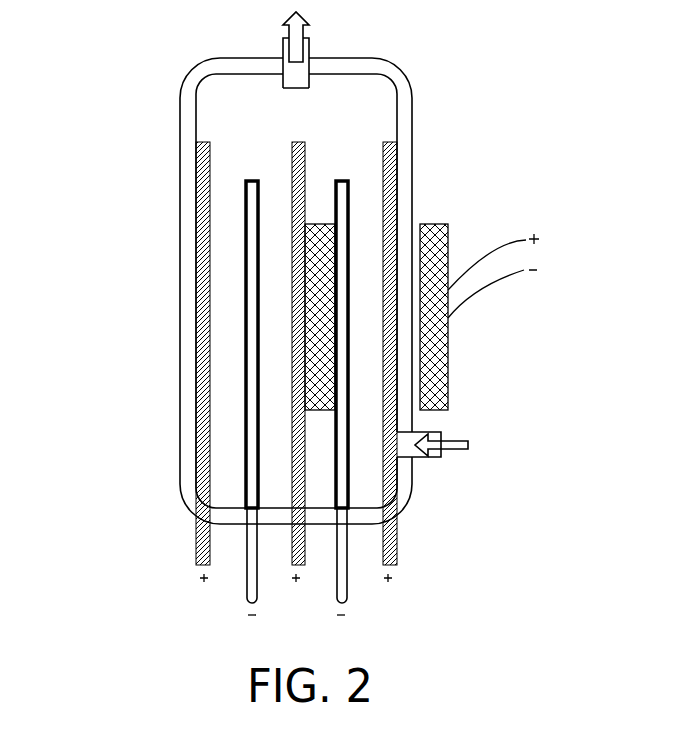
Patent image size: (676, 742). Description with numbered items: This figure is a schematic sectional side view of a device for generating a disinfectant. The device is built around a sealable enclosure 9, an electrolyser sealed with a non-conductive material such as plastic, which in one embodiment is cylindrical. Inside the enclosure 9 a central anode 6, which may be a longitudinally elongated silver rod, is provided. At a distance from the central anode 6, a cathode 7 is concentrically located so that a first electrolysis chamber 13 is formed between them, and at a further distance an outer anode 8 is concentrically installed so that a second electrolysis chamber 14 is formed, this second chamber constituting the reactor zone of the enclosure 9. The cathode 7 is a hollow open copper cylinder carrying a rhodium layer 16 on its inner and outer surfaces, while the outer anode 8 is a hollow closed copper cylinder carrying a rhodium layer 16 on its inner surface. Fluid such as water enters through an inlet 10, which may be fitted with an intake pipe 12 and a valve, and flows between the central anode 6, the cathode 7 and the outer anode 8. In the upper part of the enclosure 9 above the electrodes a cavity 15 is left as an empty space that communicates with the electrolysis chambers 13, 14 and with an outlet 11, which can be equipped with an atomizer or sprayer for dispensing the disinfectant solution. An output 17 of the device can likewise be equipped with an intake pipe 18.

The central anode 6 is at (305, 137).
The cathode 7 is at (350, 180).
The outer anode 8 is at (398, 141).
The sealable enclosure 9 is at (383, 452).
The inlet 10 is at (400, 82).
The outlet 11 is at (400, 445).
The intake pipe 12 is at (300, 76).
The first electrolysis chamber 13 is at (335, 224).
The second electrolysis chamber 14 is at (280, 207).
The cavity 15 is at (230, 208).
The rhodium layer 16 is at (287, 113).
The output 17 is at (437, 432).
The intake pipe 18 is at (285, 63).